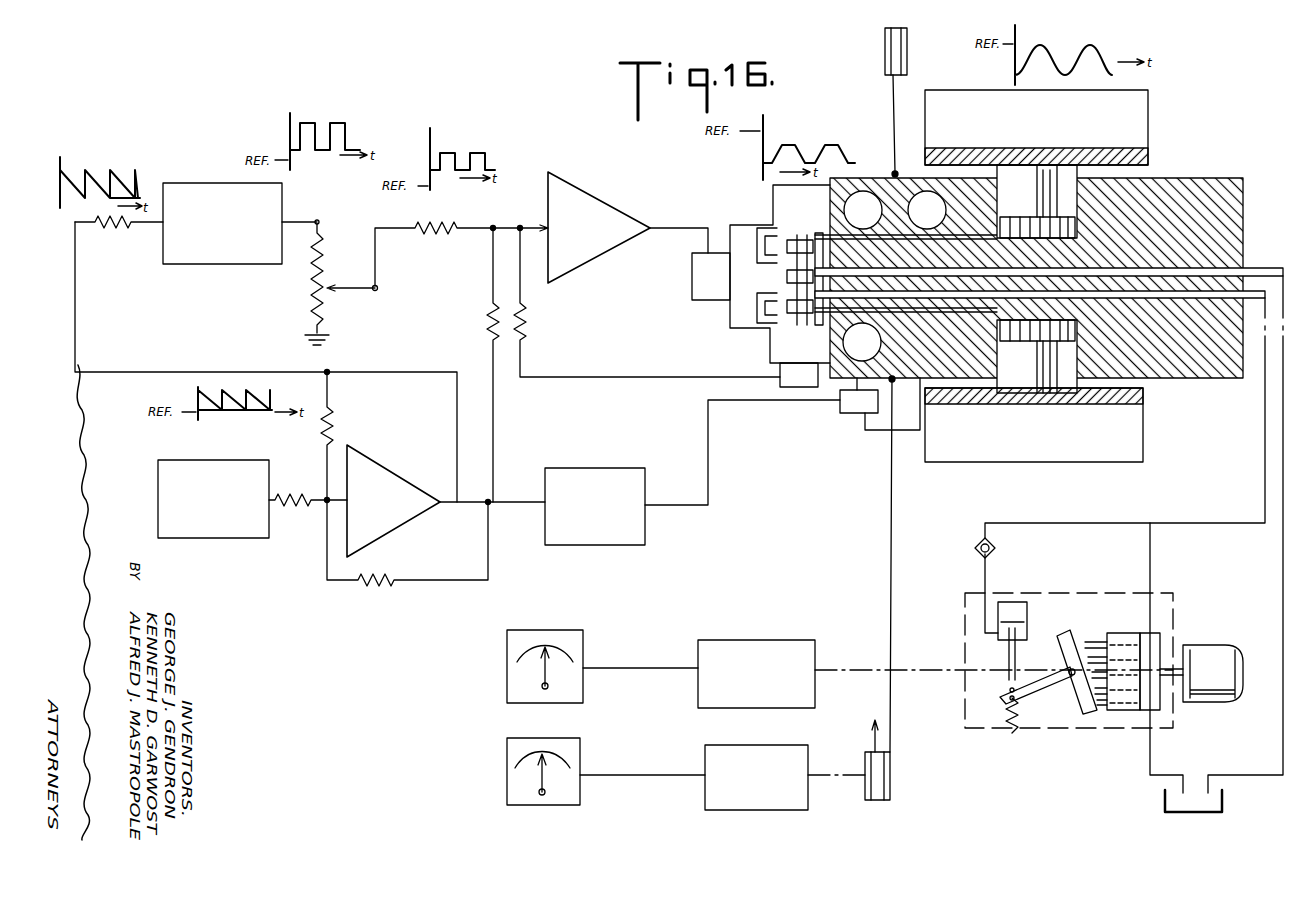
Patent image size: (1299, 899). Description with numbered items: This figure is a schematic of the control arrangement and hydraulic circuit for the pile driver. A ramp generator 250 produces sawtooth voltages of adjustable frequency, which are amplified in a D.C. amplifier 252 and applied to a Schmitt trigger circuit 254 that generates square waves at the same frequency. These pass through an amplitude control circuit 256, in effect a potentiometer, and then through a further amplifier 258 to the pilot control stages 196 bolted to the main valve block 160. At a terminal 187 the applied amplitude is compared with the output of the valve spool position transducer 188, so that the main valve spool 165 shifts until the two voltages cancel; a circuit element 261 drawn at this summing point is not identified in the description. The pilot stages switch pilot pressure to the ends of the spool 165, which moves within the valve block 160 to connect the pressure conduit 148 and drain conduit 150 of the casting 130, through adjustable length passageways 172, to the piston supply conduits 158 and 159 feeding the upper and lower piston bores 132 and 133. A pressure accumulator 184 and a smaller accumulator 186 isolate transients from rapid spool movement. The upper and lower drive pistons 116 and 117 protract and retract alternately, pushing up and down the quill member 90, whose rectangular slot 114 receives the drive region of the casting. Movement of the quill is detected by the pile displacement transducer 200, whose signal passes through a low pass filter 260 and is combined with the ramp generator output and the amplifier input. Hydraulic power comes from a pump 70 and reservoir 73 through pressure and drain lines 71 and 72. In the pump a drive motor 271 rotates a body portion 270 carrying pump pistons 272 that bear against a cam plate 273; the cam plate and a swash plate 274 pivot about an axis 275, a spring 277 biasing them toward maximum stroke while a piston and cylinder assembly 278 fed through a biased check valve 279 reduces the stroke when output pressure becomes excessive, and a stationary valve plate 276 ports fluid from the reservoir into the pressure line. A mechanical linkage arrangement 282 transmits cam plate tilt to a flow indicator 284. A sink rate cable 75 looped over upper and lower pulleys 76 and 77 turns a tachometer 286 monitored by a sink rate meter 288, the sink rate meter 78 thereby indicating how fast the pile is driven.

The Schmitt trigger circuit 254 is at (230, 200).
The amplitude control circuit 256 is at (335, 250).
The amplifier 258 is at (580, 197).
The summing resistor network 261 is at (493, 226).
The terminal 187 is at (520, 226).
The pilot control stages 196 is at (692, 286).
The ramp generator 250 is at (240, 460).
The D.C. amplifier 252 is at (415, 436).
The low pass filter 260 is at (628, 452).
The valve spool position transducer 188 is at (780, 370).
The pile displacement transducer 200 is at (840, 412).
The main valve block 160 is at (773, 190).
The adjustable length passageway 172 is at (757, 232).
The main valve spool 165 is at (785, 278).
The casting 130 is at (1235, 206).
The drain conduit 150 is at (1215, 270).
The pressure conduit 148 is at (1192, 296).
The pressure accumulator 184 is at (858, 195).
The piston supply conduit 158 is at (938, 202).
The piston supply conduit 159 is at (930, 320).
The upper piston bore 132 is at (1076, 222).
The lower piston bore 133 is at (1076, 333).
The quill member 90 is at (1140, 126).
The rectangular slot 114 is at (1152, 165).
The upper drive piston 116 is at (1060, 165).
The smaller accumulator 186 is at (955, 176).
The lower drive piston 117 is at (1020, 392).
The upper sink rate cable pulley 76 is at (908, 58).
The sink rate cable 75 is at (888, 530).
The lower sink rate cable pulley 77 is at (890, 788).
The flow indicator 284 is at (570, 630).
The mechanical linkage arrangement 282 is at (760, 640).
The sink rate meter 288 is at (580, 742).
The tachometer 286 is at (786, 810).
The sink rate meter 78 is at (670, 798).
The hydraulic pressure line 71 is at (1228, 506).
The drain line 72 is at (1281, 570).
The reservoir 73 is at (1164, 810).
The biased check valve 279 is at (982, 538).
The pump 70 is at (1191, 612).
The piston and cylinder assembly 278 is at (998, 615).
The spring 277 is at (1008, 715).
The swash plate 274 is at (1022, 698).
The axis 275 is at (1068, 668).
The cam plate 273 is at (1072, 630).
The pump pistons 272 is at (1097, 640).
The rotatable body portion 270 is at (1128, 632).
The stationary valve plate 276 is at (1160, 708).
The drive motor 271 is at (1206, 645).